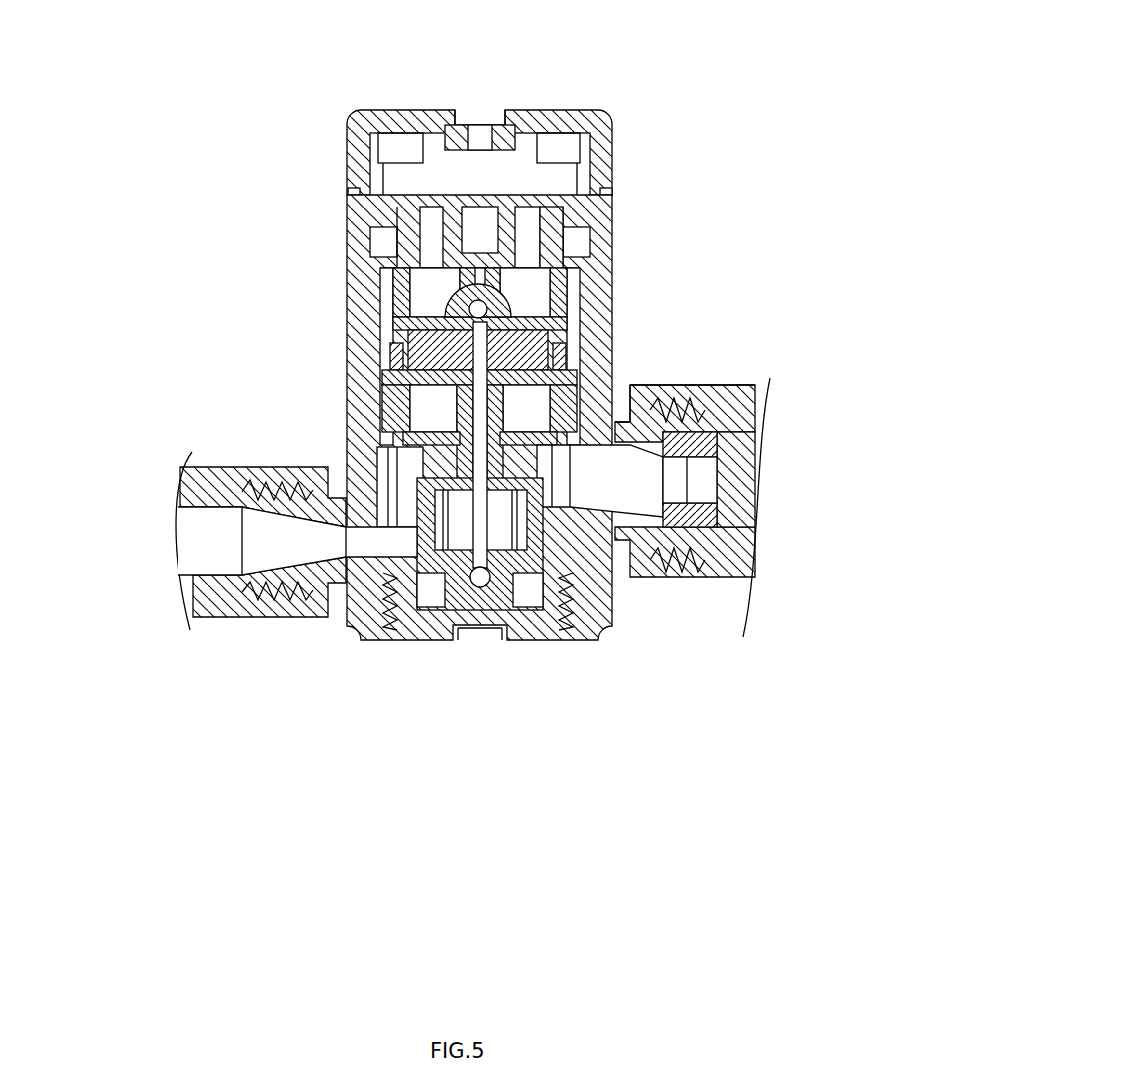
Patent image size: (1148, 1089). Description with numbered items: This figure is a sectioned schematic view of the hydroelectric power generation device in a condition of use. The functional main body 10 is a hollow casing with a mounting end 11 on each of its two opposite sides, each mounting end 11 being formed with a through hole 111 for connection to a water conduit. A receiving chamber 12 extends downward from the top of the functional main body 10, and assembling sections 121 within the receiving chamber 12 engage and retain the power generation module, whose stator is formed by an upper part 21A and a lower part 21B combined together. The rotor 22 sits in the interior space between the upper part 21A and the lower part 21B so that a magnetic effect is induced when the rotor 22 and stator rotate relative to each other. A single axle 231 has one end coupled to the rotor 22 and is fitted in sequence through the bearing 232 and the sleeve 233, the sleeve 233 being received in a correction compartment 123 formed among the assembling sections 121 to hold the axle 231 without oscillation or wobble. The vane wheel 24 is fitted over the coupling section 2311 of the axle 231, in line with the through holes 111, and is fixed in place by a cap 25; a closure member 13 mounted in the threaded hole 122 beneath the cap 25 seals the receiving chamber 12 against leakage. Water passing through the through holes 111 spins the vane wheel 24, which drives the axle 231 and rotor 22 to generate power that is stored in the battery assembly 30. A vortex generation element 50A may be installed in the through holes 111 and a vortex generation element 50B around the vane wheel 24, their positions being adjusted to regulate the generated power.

The battery assembly 30 is at (612, 120).
The functional main body 10 is at (607, 333).
The receiving chamber 12 is at (388, 243).
The upper part 21A is at (558, 298).
The lower part 21B is at (592, 362).
The bearing 232 is at (415, 332).
The rotor 22 is at (463, 377).
The sleeve 233 is at (413, 432).
The axle 231 is at (473, 458).
The correction compartment 123 is at (413, 437).
The vane wheel 24 is at (457, 540).
The vortex generation element 50A is at (415, 548).
The cap 25 is at (470, 580).
The coupling section 2311 is at (503, 560).
The closure member 13 is at (412, 637).
The threaded hole 122 is at (592, 638).
The mounting end 11 is at (275, 595).
The vortex generation element 50B is at (712, 468).
The assembling section 121 is at (622, 380).
The through hole 111 is at (715, 385).